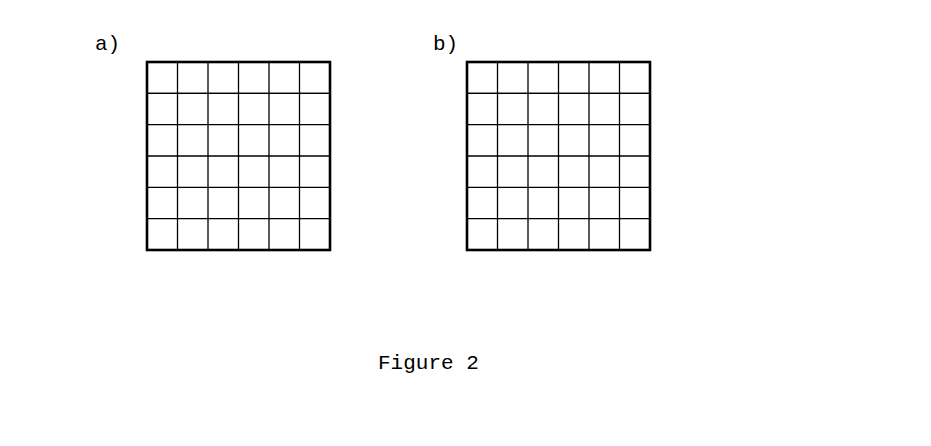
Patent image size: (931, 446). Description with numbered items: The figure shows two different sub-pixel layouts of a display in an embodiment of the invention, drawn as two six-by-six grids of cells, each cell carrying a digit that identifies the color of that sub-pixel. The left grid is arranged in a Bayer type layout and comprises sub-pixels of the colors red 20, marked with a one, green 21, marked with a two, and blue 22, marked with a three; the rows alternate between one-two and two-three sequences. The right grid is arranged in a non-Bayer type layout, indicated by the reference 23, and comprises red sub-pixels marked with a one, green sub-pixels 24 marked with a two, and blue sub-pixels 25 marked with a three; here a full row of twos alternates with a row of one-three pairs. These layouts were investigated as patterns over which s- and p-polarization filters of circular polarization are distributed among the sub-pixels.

The red sub-pixel 20 is at (273, 130).
The green sub-pixel 21 is at (325, 76).
The blue sub-pixel 22 is at (325, 114).
The second grid pattern (b) 23 is at (593, 130).
The green sub-pixel 24 is at (645, 76).
The blue sub-pixel 25 is at (645, 114).